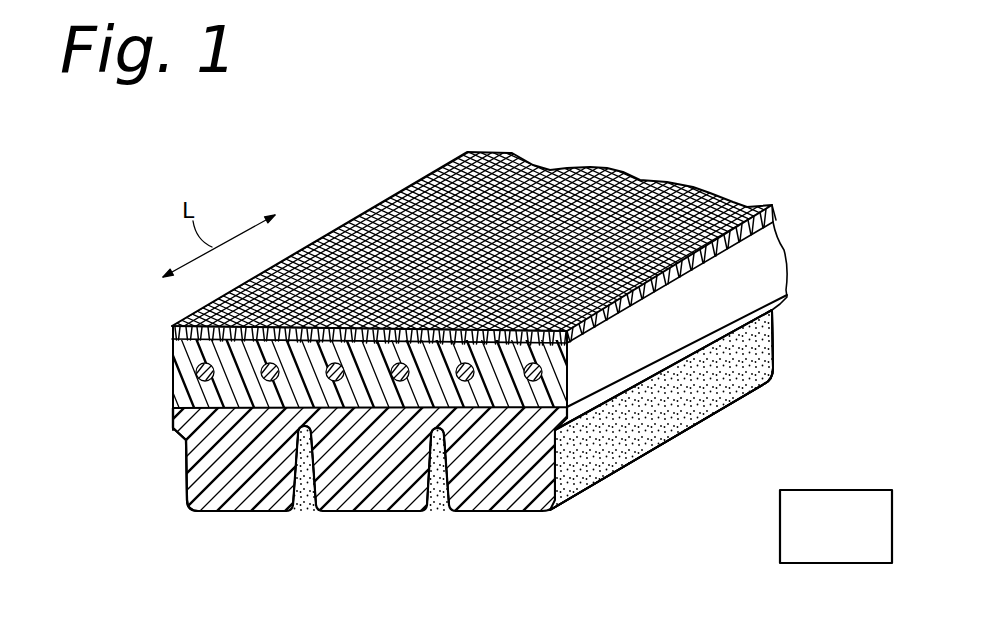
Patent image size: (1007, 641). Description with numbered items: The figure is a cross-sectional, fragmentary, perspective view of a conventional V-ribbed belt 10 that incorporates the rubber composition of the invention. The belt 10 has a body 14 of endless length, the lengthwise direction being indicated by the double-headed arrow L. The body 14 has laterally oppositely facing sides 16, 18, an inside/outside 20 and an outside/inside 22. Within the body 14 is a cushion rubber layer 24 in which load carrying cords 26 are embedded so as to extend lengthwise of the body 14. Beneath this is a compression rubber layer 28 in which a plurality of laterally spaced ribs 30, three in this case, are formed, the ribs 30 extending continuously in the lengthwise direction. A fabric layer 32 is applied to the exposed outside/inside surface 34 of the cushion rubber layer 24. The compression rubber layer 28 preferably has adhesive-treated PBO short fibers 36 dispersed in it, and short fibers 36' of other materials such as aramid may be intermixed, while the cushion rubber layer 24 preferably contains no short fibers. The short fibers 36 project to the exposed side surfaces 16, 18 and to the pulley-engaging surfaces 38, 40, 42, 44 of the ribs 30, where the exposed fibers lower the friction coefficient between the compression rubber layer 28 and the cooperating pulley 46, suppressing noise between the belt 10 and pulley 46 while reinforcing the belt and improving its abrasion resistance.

The V-ribbed belt 10 is at (292, 148).
The body 14 is at (576, 504).
The side 16 is at (187, 464).
The side 18 is at (540, 373).
The inside/outside 20 is at (364, 520).
The outside/inside 22 is at (289, 333).
The cushion rubber layer 24 is at (172, 382).
The load carrying cords 26 is at (733, 373).
The compression rubber layer 28 is at (188, 480).
The ribs 30 is at (240, 512).
The fabric layer 32 is at (655, 276).
The outside/inside surface 34 is at (463, 329).
The short fibers 36 is at (661, 429).
The short fibers 36' is at (716, 410).
The pulley-engaging surface 38 is at (296, 506).
The pulley-engaging surface 40 is at (313, 512).
The pulley-engaging surface 42 is at (430, 510).
The pulley-engaging surface 44 is at (447, 512).
The pulley 46 is at (705, 418).